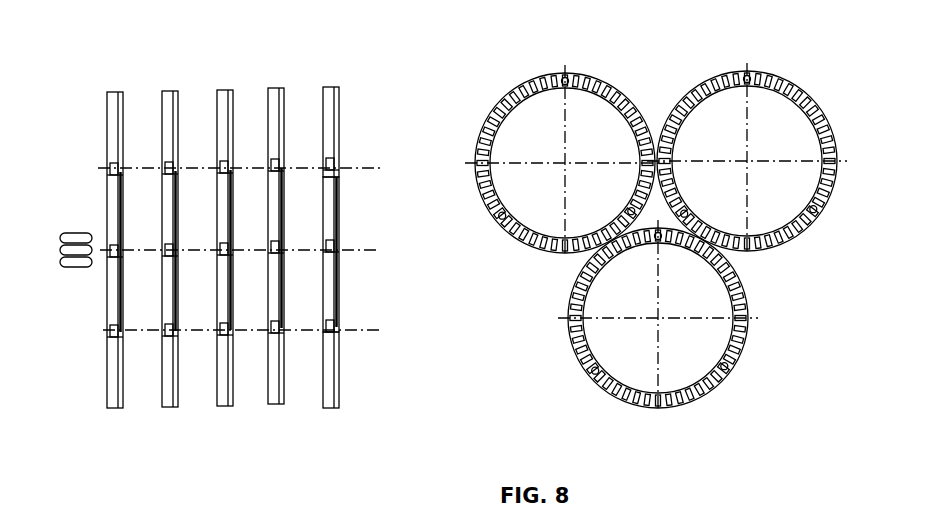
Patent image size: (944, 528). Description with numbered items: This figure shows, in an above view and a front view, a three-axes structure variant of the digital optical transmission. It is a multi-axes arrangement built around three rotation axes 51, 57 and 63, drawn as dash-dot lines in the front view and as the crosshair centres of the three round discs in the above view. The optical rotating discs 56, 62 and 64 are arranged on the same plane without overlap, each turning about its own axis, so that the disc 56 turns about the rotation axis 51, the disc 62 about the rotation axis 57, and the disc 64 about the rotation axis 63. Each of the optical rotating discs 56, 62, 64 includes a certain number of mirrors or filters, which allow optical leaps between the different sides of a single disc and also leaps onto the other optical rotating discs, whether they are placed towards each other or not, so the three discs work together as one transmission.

The rotation axis 51 is at (362, 163).
The optical rotating disc 56 is at (336, 100).
The rotation axis 57 is at (363, 247).
The optical rotating disc 62 is at (340, 287).
The rotation axis 63 is at (340, 330).
The optical rotating disc 64 is at (340, 388).